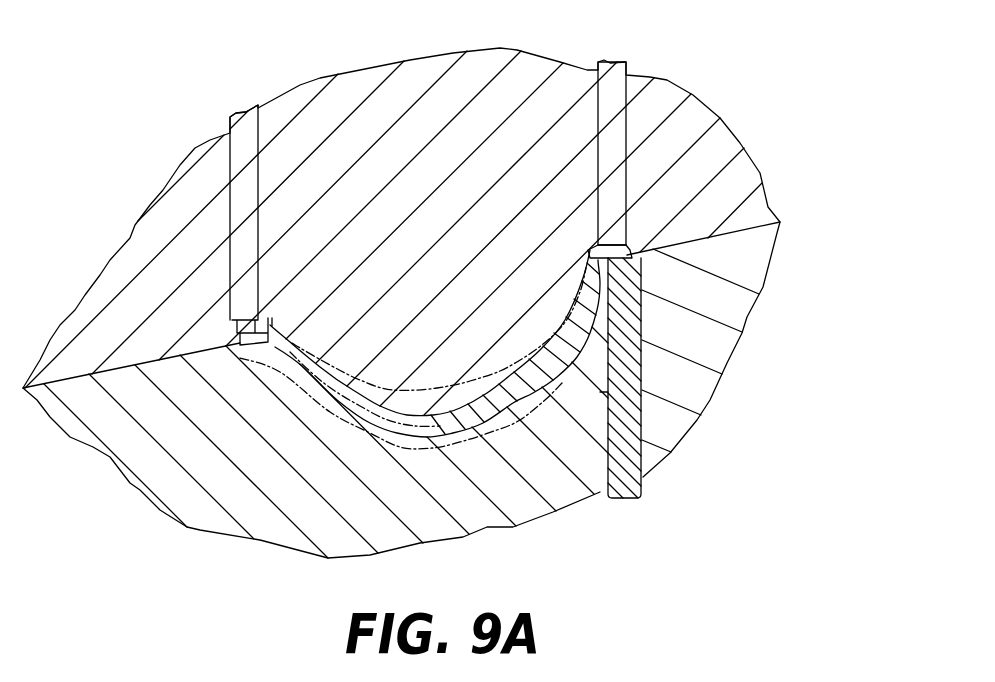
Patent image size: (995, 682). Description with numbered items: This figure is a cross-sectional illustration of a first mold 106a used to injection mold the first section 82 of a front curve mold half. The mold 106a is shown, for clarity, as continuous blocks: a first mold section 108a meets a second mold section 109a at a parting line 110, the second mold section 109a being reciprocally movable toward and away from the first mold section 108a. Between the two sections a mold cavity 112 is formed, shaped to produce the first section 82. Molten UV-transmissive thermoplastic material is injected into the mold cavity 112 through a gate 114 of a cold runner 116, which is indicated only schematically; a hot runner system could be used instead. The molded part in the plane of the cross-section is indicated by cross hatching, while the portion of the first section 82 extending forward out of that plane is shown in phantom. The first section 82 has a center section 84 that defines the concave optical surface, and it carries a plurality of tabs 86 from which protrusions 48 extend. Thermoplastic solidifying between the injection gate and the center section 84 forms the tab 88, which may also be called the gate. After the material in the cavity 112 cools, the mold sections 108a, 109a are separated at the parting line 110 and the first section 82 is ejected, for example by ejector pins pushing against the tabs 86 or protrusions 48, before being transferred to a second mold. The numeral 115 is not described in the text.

The protrusions 48 is at (237, 340).
The first section 82 is at (428, 448).
The center section 84 is at (560, 306).
The tabs 86 is at (600, 392).
The tab (gate) 88 is at (632, 255).
The first mold 106a is at (768, 131).
The first mold section 108a is at (700, 95).
The second mold section 109a is at (763, 288).
The parting line 110 is at (767, 221).
The mold cavity 112 is at (368, 432).
The gate 114 is at (639, 258).
The channel member 115 is at (627, 65).
The cold runner 116 is at (643, 480).